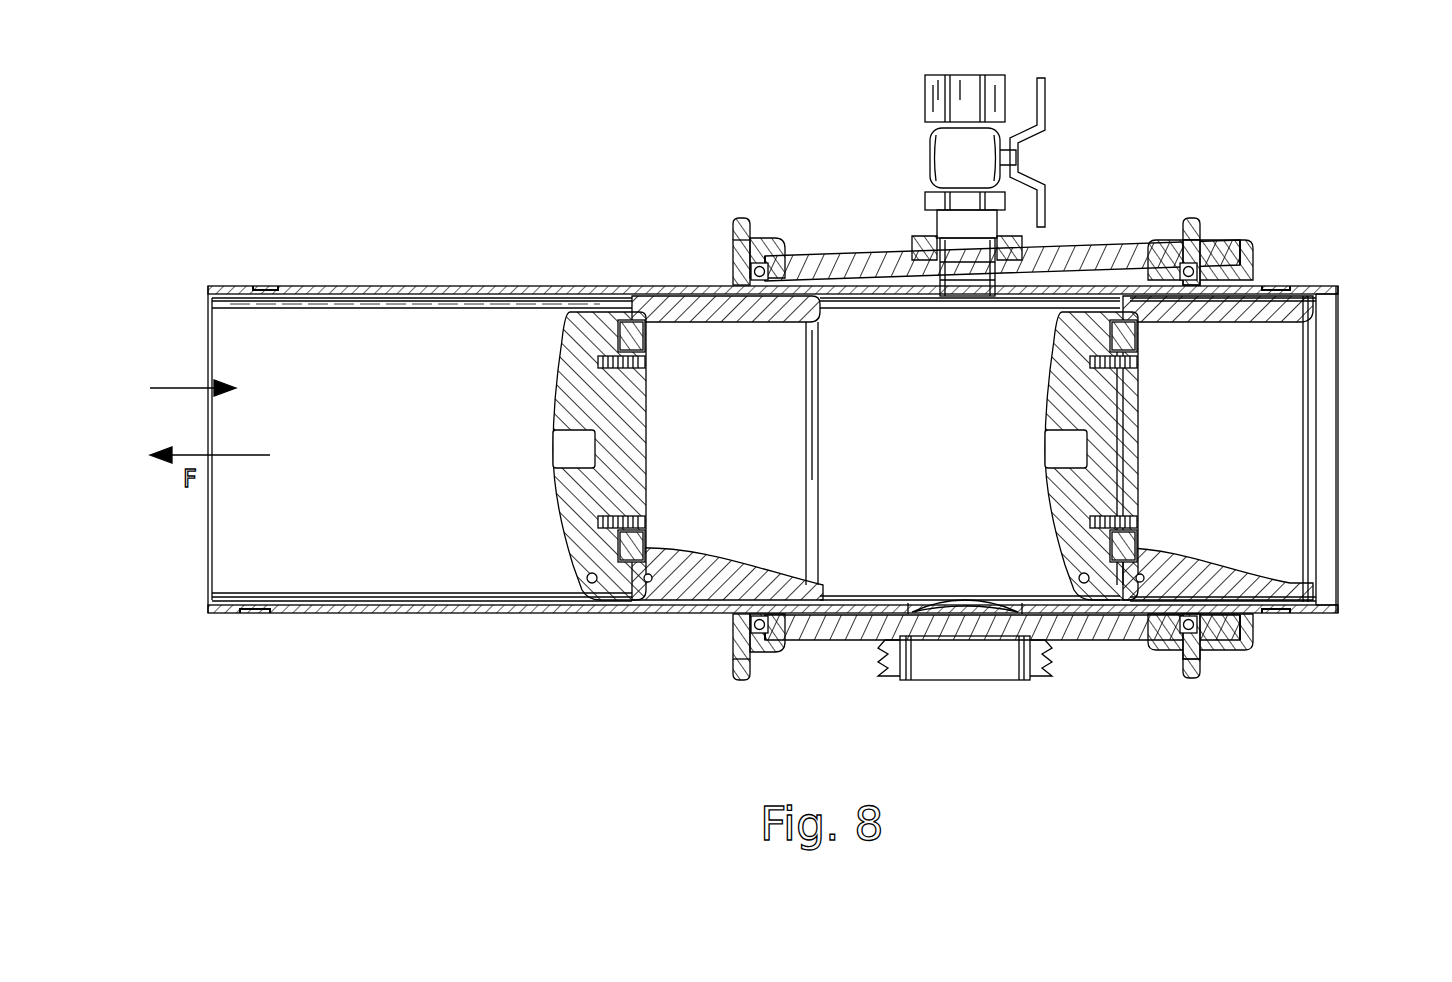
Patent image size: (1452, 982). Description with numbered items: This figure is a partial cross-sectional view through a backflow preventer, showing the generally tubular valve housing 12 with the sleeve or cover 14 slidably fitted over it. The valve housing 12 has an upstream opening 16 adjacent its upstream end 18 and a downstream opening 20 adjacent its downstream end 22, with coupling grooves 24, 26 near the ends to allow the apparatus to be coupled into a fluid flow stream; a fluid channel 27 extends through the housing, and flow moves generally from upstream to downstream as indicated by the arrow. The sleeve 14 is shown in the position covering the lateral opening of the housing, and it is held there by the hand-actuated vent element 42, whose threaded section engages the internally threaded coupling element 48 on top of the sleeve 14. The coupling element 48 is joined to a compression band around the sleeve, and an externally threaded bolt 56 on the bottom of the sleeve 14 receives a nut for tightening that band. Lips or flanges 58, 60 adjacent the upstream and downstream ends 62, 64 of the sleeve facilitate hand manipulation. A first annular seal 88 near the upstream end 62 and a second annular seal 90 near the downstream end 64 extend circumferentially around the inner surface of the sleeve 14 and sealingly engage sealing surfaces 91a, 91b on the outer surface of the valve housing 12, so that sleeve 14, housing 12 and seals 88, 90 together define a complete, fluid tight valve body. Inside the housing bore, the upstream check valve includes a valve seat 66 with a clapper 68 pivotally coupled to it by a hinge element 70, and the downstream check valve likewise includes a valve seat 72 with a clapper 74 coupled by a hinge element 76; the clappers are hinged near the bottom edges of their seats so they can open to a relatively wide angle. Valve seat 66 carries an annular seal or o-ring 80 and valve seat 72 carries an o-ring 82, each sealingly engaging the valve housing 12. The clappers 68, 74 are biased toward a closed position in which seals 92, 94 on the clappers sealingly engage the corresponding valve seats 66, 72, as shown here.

The valve housing 12 is at (437, 287).
The sleeve 14 is at (832, 258).
The upstream opening 16 is at (1330, 442).
The upstream end 18 is at (1342, 292).
The downstream opening 20 is at (170, 377).
The downstream end 22 is at (210, 613).
The coupling groove 24 is at (1278, 286).
The coupling groove 26 is at (262, 290).
The fluid channel 27 is at (392, 562).
The hand-actuated vent element 42 is at (925, 78).
The internally threaded coupling element 48 is at (920, 240).
The externally threaded bolt 56 is at (885, 675).
The lip or flange 58 is at (1198, 222).
The lip or flange 60 is at (745, 222).
The upstream end of sleeve 62 is at (1240, 248).
The downstream end of sleeve 64 is at (730, 252).
The valve seat 66 is at (1235, 320).
The clapper 68 is at (1062, 497).
The hinge element 70 is at (1085, 582).
The valve seat 72 is at (735, 324).
The clapper 74 is at (572, 520).
The hinge element 76 is at (594, 600).
The annular seal or o-ring 80 is at (1150, 262).
The annular seal or o-ring 82 is at (752, 298).
The first annular seal 88 is at (1188, 255).
The second annular seal 90 is at (772, 248).
The sealing surface 91a is at (1210, 258).
The sealing surface 91b is at (735, 275).
The seal 92 is at (1140, 338).
The seal 94 is at (652, 340).